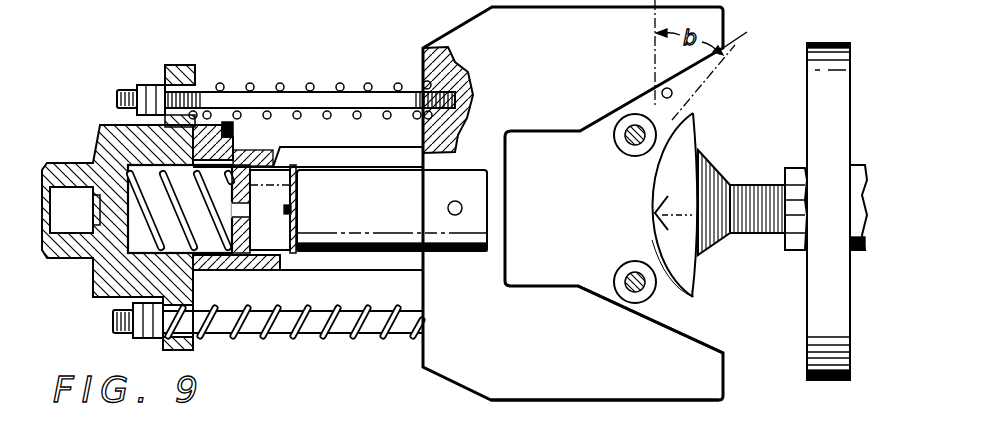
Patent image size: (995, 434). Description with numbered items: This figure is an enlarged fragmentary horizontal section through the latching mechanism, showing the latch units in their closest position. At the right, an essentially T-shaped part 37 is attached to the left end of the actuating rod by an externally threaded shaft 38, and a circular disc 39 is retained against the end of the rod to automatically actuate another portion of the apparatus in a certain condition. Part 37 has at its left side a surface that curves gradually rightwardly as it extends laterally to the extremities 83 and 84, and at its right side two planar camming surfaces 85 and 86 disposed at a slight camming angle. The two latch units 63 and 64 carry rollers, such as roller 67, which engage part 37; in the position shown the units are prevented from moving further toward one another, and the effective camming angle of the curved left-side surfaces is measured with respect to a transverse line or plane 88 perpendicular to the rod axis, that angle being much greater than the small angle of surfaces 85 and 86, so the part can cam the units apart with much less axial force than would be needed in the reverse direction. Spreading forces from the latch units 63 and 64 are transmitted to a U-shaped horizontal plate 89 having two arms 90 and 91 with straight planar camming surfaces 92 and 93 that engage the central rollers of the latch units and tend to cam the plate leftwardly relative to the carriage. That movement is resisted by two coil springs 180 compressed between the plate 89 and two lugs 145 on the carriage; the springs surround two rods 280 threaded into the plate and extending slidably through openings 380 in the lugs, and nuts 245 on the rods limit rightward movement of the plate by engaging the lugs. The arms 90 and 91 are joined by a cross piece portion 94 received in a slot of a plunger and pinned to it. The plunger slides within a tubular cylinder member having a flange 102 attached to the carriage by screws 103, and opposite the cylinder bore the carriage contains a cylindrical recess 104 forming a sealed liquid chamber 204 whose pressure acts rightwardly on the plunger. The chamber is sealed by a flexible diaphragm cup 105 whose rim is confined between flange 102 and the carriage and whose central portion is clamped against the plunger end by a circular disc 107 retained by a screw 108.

The T-shaped part 37 is at (650, 203).
The externally threaded shaft 38 is at (753, 238).
The circular disc 39 is at (827, 53).
The latch unit 63 is at (607, 288).
The latch unit 64 is at (628, 110).
The roller 67 is at (627, 153).
The extremity of part 37 83 is at (693, 300).
The extremity of part 37 84 is at (693, 115).
The camming surface 85 is at (697, 260).
The camming surface 86 is at (697, 155).
The transverse line or plane 88 is at (655, 55).
The U-shaped plate 89 is at (462, 363).
The arm of plate 89 90 is at (653, 392).
The arm of plate 89 91 is at (468, 30).
The camming surface 92 is at (660, 316).
The camming surface 93 is at (664, 90).
The cross piece portion 94 is at (445, 268).
The flange 102 is at (215, 128).
The screws 103 is at (233, 133).
The cylindrical recess 104 is at (147, 252).
The flexible diaphragm cup 105 is at (313, 147).
The circular disc 107 is at (293, 188).
The screw 108 is at (292, 210).
The lugs 145 is at (185, 67).
The coil springs 180 is at (335, 90).
The sealed chamber 204 is at (252, 273).
The nuts 245 is at (157, 90).
The rods 280 is at (263, 97).
The openings 380 is at (158, 83).